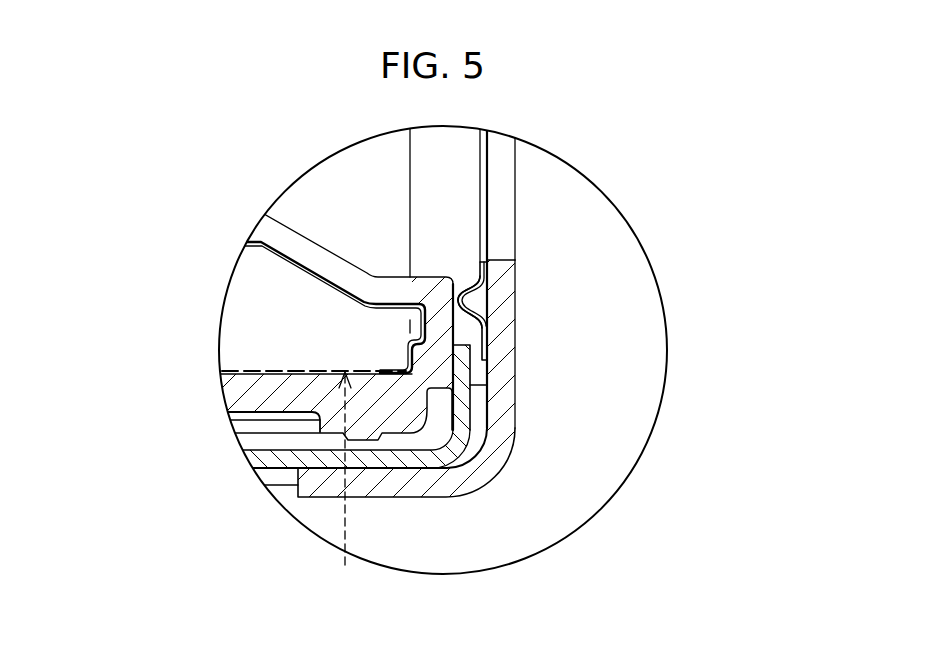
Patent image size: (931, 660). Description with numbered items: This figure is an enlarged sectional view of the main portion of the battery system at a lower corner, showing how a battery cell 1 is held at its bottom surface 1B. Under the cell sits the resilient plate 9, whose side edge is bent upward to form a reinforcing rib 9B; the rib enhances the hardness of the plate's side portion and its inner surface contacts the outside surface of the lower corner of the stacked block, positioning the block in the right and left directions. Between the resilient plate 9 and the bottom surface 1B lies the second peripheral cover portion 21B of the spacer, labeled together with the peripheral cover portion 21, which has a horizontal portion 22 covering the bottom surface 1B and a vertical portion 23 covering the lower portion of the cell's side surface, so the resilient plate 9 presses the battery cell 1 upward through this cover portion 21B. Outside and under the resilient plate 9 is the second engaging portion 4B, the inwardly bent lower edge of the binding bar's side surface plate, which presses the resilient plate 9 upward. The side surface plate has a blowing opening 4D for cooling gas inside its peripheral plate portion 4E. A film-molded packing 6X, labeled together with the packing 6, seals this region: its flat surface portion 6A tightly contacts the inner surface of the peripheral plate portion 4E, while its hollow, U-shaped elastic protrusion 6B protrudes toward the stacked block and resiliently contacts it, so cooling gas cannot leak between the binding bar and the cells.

The battery cell 1 is at (350, 197).
The bottom surface 1B is at (343, 489).
The second engaging portion 4B is at (357, 462).
The blowing opening 4D is at (382, 202).
The peripheral plate portion 4E is at (395, 380).
The seal member 6 is at (472, 240).
The film-molded packing 6X is at (472, 240).
The flat surface portion 6A is at (470, 314).
The elastic protrusion 6B is at (469, 288).
The resilient plate 9 is at (360, 330).
The reinforcing rib 9B is at (461, 357).
The electrode plate 21 is at (327, 307).
The second peripheral cover portion 21B is at (327, 307).
The horizontal portion 22 is at (395, 380).
The vertical portion 23 is at (395, 380).